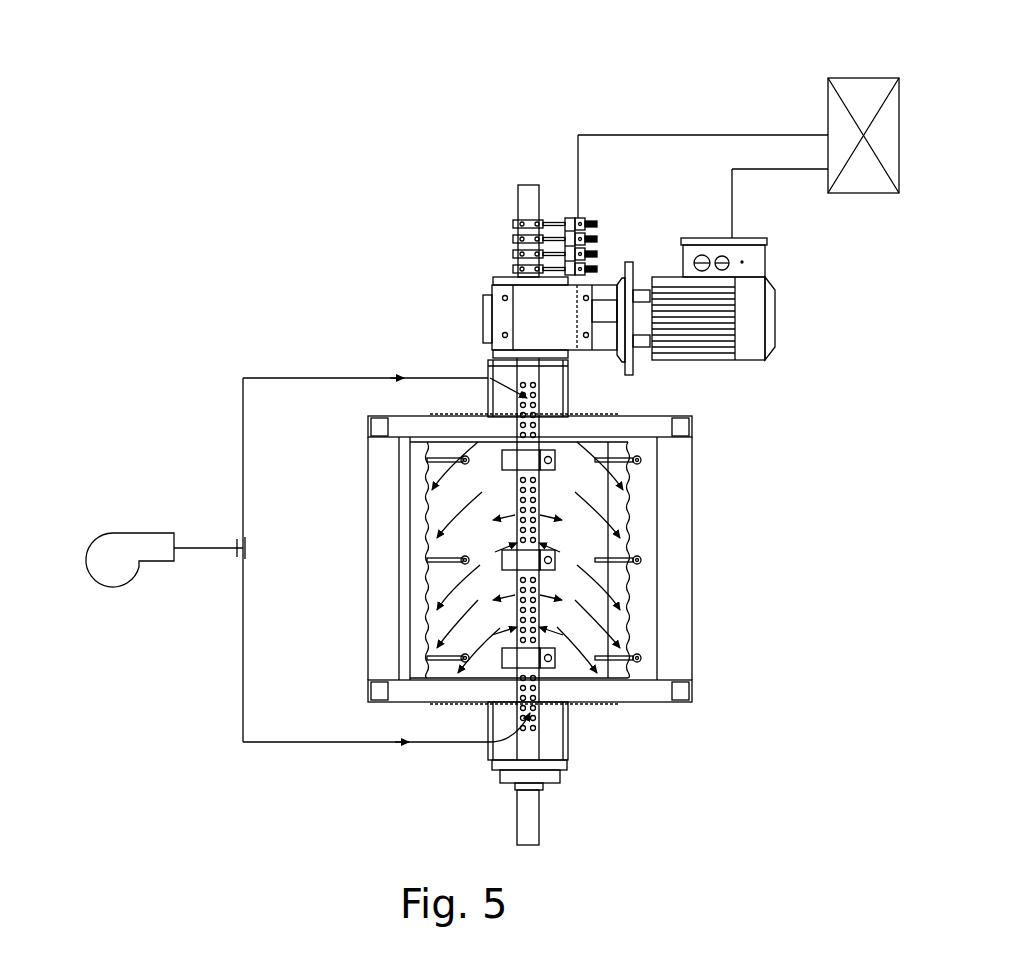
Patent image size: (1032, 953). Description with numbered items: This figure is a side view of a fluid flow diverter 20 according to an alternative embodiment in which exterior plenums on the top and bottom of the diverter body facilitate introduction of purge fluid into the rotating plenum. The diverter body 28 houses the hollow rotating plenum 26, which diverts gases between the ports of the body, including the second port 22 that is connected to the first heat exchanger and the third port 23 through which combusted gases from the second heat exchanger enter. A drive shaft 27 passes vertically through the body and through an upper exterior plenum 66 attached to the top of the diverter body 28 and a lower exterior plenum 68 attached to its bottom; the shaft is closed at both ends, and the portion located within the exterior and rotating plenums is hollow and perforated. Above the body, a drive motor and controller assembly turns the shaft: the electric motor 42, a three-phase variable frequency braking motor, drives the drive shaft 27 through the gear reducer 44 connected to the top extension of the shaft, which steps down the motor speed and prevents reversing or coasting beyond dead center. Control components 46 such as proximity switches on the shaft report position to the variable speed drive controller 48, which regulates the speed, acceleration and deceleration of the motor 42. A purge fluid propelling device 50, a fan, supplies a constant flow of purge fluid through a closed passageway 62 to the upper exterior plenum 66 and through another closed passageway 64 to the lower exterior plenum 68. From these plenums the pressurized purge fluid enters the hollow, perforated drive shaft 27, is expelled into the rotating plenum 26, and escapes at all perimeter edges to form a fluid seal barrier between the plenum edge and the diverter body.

The grinding/drying apparatus 20 is at (277, 27).
The second port 22 is at (690, 560).
The third port 23 is at (368, 560).
The plenum 26 is at (505, 607).
The drive shaft 27 is at (522, 195).
The diverter body 28 is at (637, 693).
The electric motor 42 is at (775, 315).
The gear reducer 44 is at (483, 292).
The control components 46 is at (517, 238).
The variable speed drive controller 48 is at (865, 173).
The purge fluid propelling device 50 is at (113, 560).
The closed passageway 62 is at (377, 375).
The closed passageway 64 is at (378, 745).
The upper exterior plenum 66 is at (492, 379).
The lower exterior plenum 68 is at (567, 746).